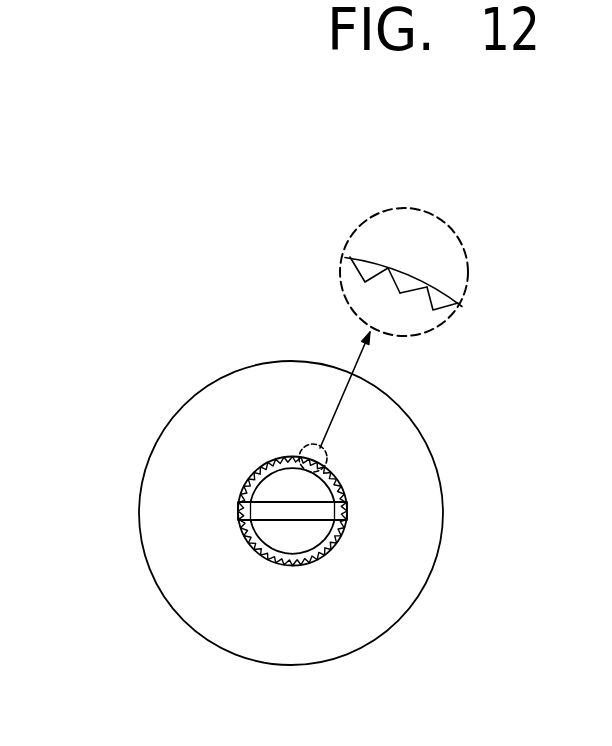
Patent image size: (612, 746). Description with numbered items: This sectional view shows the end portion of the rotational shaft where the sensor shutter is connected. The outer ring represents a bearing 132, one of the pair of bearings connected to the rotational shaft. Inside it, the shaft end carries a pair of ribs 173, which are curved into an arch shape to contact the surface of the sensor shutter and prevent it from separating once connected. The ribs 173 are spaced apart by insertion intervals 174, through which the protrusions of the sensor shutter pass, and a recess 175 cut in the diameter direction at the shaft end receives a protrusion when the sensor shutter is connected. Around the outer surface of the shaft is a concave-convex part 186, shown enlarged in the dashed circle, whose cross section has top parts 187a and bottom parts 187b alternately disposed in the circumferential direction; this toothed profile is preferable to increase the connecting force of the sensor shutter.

The bearing 132 is at (185, 405).
The rib 173 is at (248, 489).
The insertion interval 174 is at (259, 508).
The recess 175 is at (277, 517).
The concave-convex part 186 is at (378, 138).
The top part 187a is at (350, 257).
The bottom part 187b is at (433, 310).